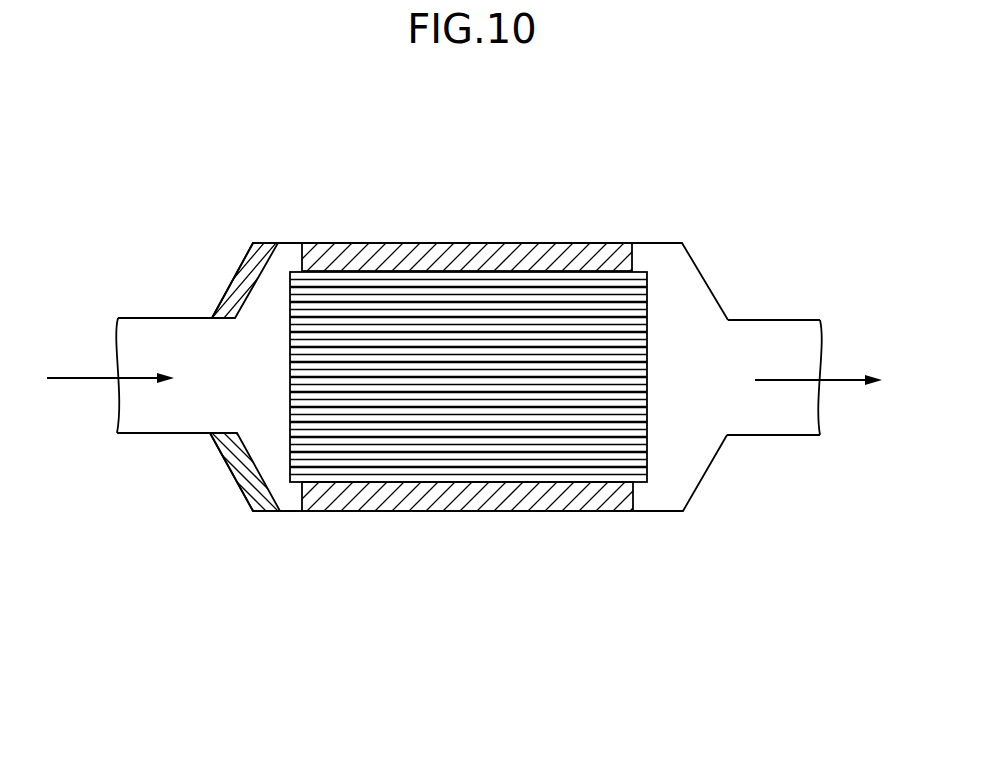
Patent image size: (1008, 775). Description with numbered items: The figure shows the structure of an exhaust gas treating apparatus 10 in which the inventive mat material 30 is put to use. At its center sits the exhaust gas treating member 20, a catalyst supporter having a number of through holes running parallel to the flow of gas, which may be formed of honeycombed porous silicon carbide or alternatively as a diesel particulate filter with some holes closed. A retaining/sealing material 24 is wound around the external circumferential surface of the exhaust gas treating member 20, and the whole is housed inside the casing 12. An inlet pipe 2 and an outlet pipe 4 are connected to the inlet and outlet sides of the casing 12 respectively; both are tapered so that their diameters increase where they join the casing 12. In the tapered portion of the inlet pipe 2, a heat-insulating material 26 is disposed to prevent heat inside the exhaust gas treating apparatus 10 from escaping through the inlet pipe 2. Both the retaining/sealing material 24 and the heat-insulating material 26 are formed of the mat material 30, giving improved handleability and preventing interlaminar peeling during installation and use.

The exhaust gas treating apparatus 10 is at (561, 137).
The inlet pipe 2 is at (165, 318).
The outlet pipe 4 is at (794, 320).
The casing 12 is at (658, 512).
The exhaust gas treating member 20 is at (662, 305).
The retaining/sealing material 24 is at (438, 243).
The heat-insulating material 26 is at (258, 280).
The mat material 30 is at (411, 378).